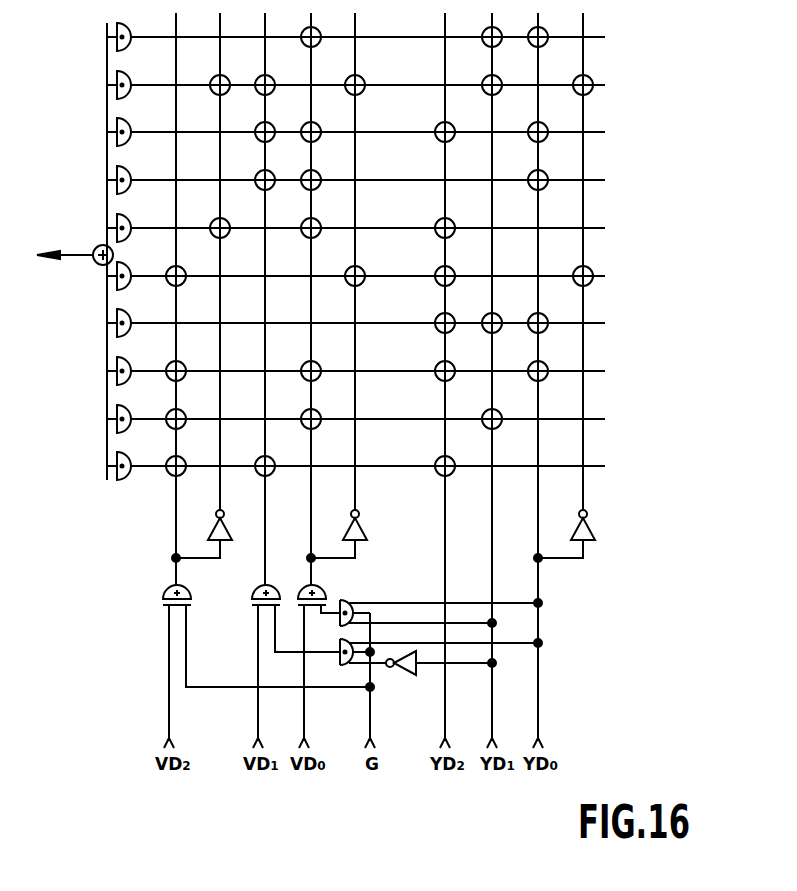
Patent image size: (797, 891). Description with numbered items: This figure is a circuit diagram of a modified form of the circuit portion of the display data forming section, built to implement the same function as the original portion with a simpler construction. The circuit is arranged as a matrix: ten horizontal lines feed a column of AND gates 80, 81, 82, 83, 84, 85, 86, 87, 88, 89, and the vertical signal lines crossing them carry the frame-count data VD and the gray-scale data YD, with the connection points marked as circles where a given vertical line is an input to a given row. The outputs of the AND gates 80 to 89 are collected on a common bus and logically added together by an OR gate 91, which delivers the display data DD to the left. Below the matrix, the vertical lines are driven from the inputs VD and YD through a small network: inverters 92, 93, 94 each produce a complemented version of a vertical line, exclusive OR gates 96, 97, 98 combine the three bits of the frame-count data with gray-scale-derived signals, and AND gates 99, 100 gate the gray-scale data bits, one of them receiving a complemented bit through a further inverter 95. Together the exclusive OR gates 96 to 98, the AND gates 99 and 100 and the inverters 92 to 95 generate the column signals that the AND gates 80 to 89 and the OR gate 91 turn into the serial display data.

The AND gate 80 is at (356, 32).
The AND gate 81 is at (356, 80).
The AND gate 82 is at (356, 127).
The AND gate 83 is at (356, 175).
The AND gate 84 is at (356, 223).
The AND gate 85 is at (356, 271).
The AND gate 86 is at (356, 318).
The AND gate 87 is at (356, 366).
The AND gate 88 is at (356, 414).
The AND gate 89 is at (356, 461).
The OR gate 91 is at (98, 268).
The inverter 92 is at (230, 533).
The inverter 93 is at (366, 532).
The inverter 94 is at (595, 532).
The inverter 95 is at (404, 676).
The exclusive OR gate 96 is at (192, 595).
The exclusive OR gate 97 is at (278, 590).
The exclusive OR gate 98 is at (326, 594).
The AND gate 99 is at (339, 628).
The AND gate 100 is at (338, 661).